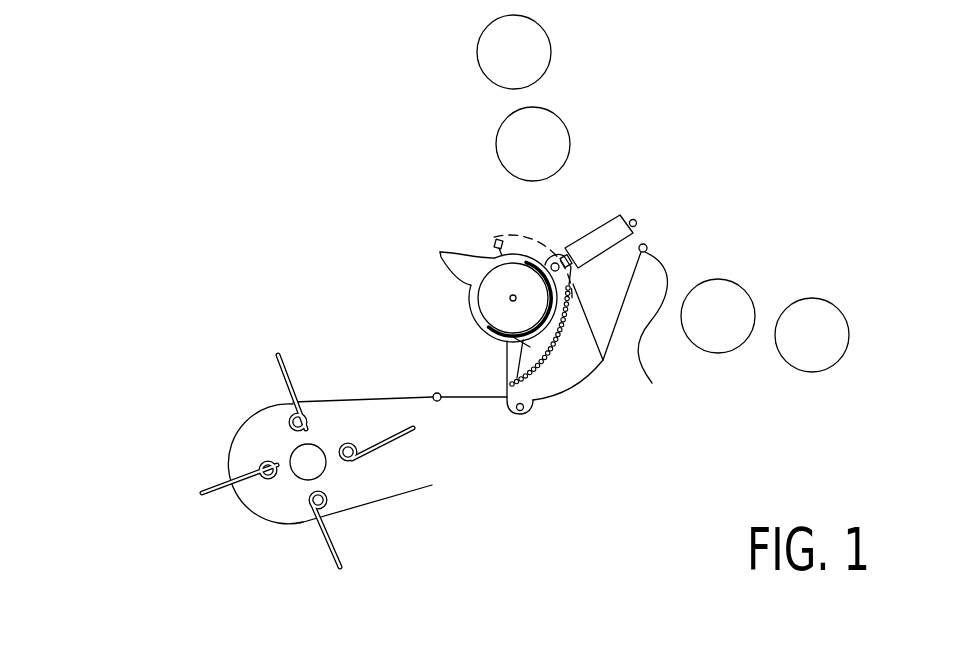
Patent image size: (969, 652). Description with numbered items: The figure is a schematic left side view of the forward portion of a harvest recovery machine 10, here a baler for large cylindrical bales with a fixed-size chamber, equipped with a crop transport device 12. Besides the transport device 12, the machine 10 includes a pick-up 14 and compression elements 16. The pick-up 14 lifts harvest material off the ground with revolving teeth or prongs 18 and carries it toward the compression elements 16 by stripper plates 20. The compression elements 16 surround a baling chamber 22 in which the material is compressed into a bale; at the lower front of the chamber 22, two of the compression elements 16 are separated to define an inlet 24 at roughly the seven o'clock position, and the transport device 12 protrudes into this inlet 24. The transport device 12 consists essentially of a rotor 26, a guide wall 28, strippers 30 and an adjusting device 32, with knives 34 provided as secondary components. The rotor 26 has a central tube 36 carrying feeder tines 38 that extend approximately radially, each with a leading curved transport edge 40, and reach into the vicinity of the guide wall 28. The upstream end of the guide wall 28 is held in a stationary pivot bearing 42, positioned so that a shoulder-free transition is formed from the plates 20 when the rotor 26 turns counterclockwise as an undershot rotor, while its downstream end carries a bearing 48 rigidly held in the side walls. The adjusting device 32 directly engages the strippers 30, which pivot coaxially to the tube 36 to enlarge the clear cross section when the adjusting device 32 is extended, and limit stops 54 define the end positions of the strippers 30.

The harvest recovery machine 10 is at (175, 202).
The crop transport device 12 is at (180, 287).
The pick-up 14 is at (155, 381).
The compression elements 16 is at (813, 317).
The teeth or prongs 18 is at (205, 492).
The stripper plates 20 is at (263, 418).
The baling chamber 22 is at (788, 82).
The inlet 24 is at (680, 210).
The rotor 26 is at (407, 320).
The guide wall 28 is at (470, 400).
The strippers 30 is at (518, 362).
The adjusting device 32 is at (585, 235).
The knives 34 is at (603, 360).
The tube 36 is at (473, 293).
The feeder tines 38 is at (453, 257).
The transport edge 40 is at (440, 258).
The pivot bearing 42 is at (435, 392).
The bearing 48 is at (667, 335).
The limit stops 54 is at (495, 243).